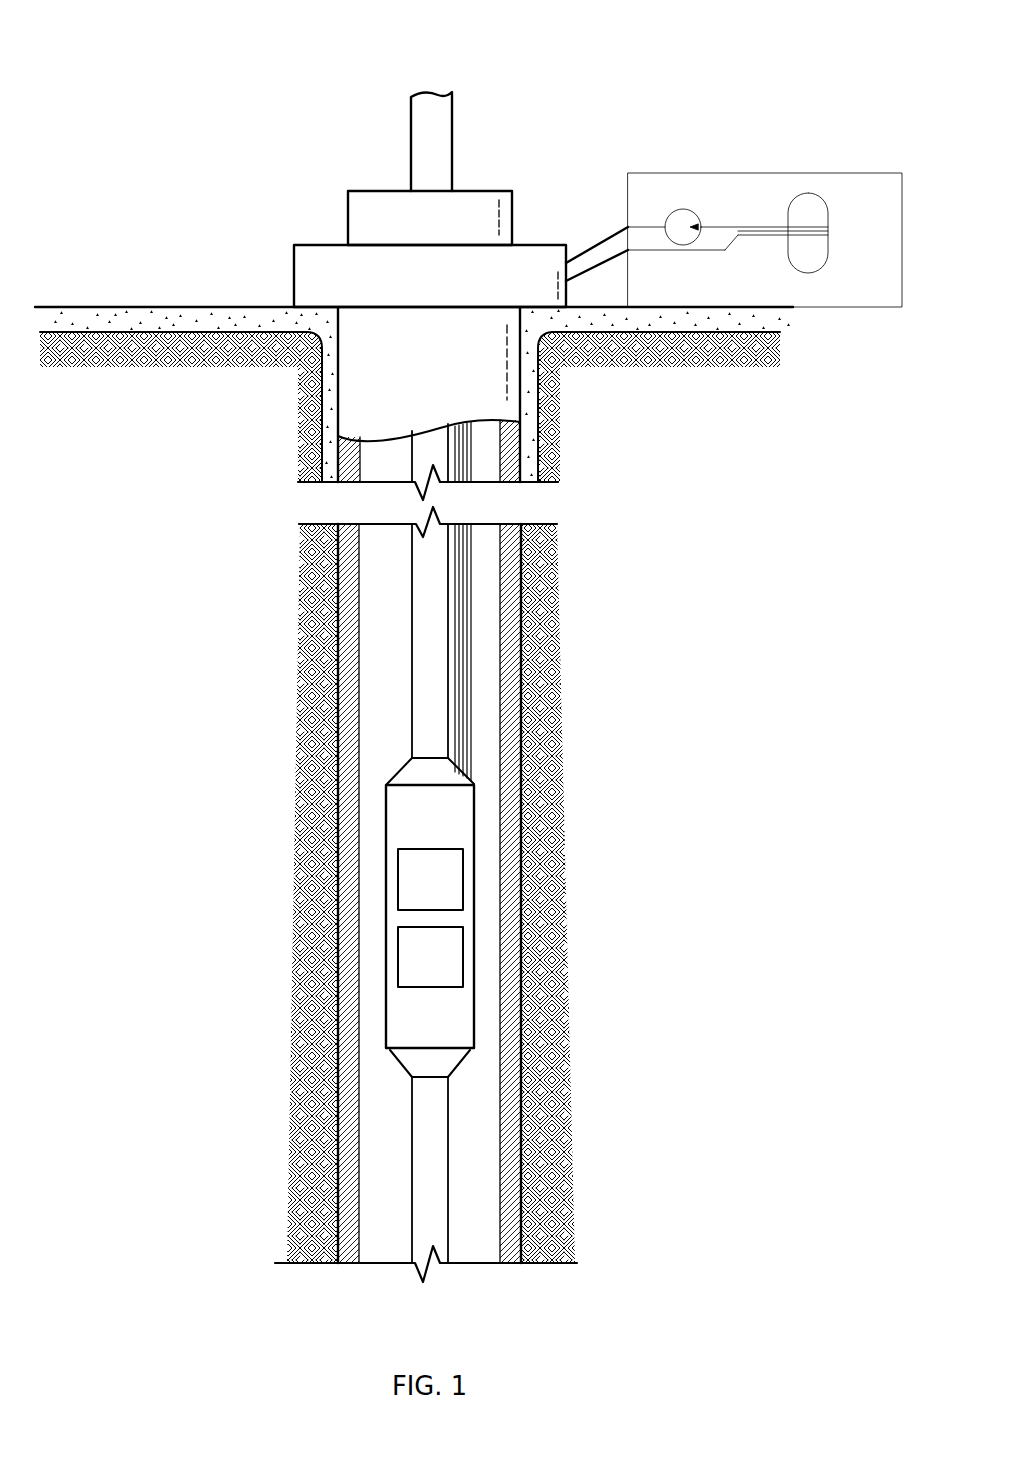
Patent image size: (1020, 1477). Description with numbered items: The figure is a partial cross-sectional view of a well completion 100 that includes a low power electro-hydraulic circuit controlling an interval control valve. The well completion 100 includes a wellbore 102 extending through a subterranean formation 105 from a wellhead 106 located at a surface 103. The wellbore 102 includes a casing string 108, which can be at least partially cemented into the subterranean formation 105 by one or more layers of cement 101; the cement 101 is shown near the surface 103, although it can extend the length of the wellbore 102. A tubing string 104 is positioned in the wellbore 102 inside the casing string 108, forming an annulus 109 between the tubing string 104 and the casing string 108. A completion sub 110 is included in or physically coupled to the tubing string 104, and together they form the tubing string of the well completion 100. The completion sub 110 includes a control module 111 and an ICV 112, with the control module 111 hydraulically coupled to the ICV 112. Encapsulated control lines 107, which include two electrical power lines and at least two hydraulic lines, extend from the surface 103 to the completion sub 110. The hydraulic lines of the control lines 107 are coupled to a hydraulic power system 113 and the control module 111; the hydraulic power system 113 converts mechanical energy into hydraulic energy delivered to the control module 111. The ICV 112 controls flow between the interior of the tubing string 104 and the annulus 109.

The well completion 100 is at (118, 56).
The cement 101 is at (184, 320).
The wellbore 102 is at (522, 595).
The surface 103 is at (153, 306).
The tubing string 104 is at (410, 578).
The subterranean formation 105 is at (179, 452).
The wellhead 106 is at (527, 244).
The encapsulated control lines 107 is at (463, 458).
The casing string 108 is at (350, 657).
The annulus 109 is at (482, 822).
The completion sub 110 is at (400, 773).
The control module 111 is at (448, 893).
The ICV 112 is at (448, 970).
The hydraulic power system 113 is at (748, 172).